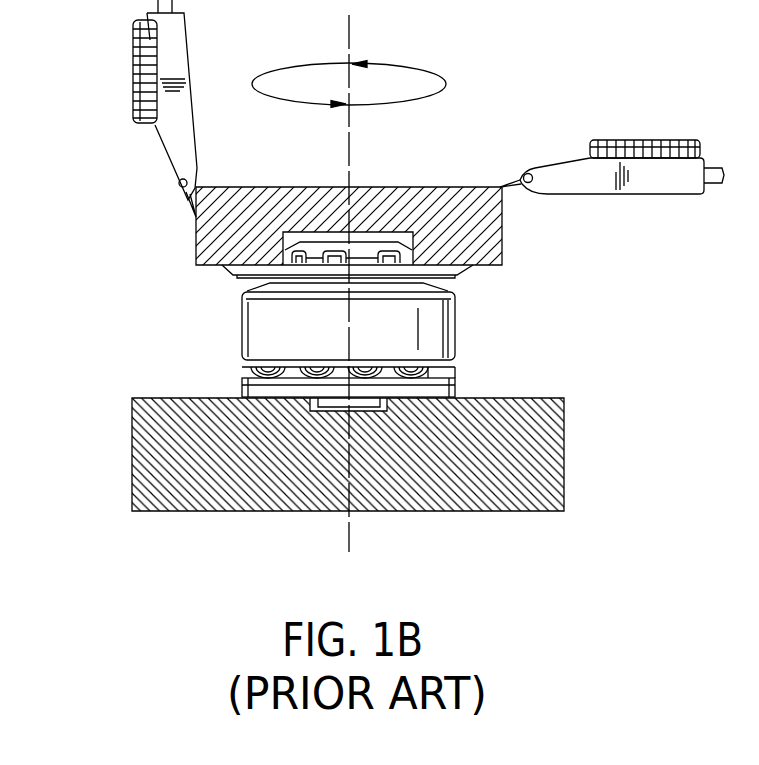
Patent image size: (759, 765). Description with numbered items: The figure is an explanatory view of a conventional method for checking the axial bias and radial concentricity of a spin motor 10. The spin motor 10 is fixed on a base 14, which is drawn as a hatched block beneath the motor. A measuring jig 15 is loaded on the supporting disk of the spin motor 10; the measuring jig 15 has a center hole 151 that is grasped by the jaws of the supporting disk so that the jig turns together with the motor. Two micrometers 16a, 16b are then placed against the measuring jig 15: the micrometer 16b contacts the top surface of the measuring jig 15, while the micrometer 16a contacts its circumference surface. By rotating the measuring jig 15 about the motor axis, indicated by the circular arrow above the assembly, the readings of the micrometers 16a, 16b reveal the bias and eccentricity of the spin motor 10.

The spin motor 10 is at (493, 335).
The base 14 is at (548, 484).
The measuring jig 15 is at (425, 187).
The center hole 151 is at (413, 240).
The micrometer 16a is at (645, 165).
The micrometer 16b is at (160, 47).